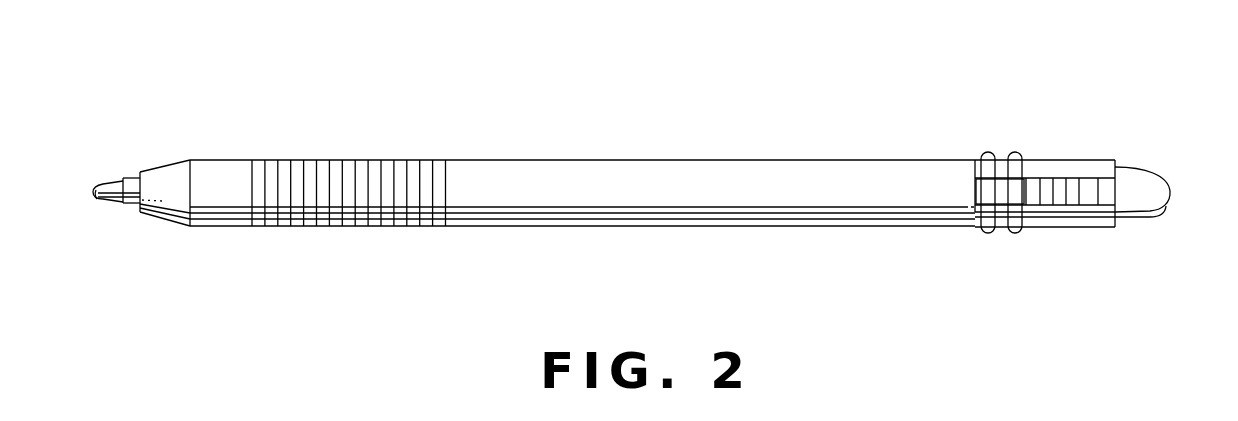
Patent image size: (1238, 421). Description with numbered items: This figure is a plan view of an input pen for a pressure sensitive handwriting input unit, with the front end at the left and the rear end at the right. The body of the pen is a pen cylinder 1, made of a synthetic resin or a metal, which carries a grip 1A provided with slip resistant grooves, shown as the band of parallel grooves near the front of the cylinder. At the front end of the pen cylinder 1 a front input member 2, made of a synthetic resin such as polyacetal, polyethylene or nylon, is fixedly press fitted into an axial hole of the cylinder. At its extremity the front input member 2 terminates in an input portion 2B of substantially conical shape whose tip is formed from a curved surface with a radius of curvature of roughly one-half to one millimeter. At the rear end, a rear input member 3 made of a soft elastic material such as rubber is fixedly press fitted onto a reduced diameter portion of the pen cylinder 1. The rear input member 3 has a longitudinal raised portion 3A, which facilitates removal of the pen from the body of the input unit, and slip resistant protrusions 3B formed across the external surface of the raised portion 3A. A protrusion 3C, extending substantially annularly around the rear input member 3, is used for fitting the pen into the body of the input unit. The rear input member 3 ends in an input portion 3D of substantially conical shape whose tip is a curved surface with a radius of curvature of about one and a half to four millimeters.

The pen cylinder 1 is at (623, 170).
The grip 1A is at (380, 226).
The front input member 2 is at (108, 168).
The input portion 2B is at (113, 218).
The rear input member 3 is at (1114, 156).
The raised portion 3A is at (988, 190).
The slip resistant protrusions 3B is at (1070, 178).
The protrusion 3C is at (1013, 235).
The input portion 3D is at (1140, 215).